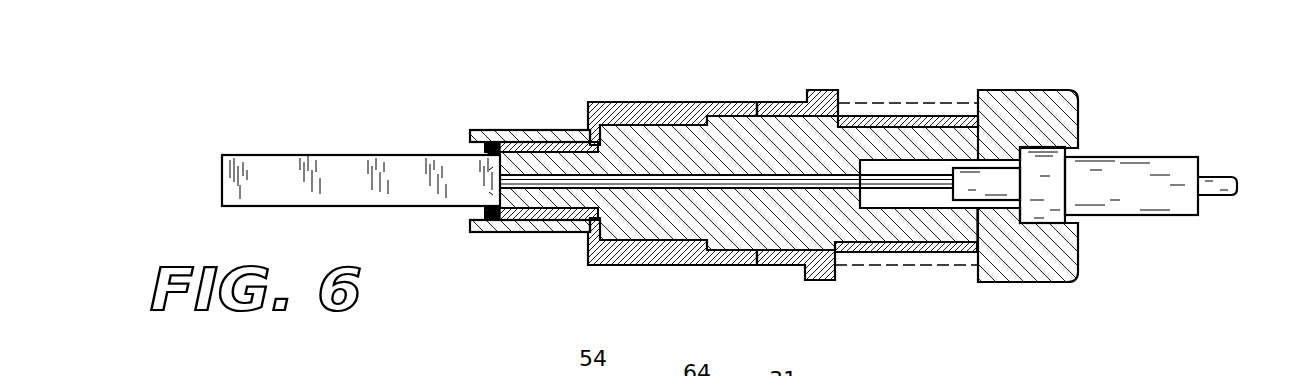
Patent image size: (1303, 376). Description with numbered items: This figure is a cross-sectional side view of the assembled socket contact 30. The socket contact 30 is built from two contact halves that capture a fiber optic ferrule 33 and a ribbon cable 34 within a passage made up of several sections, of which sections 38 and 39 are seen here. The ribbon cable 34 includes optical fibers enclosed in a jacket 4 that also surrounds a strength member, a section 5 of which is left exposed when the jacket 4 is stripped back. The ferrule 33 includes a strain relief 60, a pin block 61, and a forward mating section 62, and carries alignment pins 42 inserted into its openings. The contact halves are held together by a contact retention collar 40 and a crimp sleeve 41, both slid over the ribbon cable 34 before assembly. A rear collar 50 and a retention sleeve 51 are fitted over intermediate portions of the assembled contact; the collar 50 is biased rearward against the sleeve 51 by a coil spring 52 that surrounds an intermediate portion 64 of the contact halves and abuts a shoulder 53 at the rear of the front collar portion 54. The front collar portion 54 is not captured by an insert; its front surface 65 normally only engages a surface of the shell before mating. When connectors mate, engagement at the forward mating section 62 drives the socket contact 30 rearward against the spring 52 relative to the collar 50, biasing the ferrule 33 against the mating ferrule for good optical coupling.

The jacket 4 is at (397, 168).
The section of strength member 5 is at (529, 129).
The socket contact 30 is at (432, 83).
The fiber optic ferrule 33 is at (1117, 167).
The ribbon cable 34 is at (355, 196).
The passage section 38 is at (927, 208).
The passage section 39 is at (667, 190).
The contact retention collar 40 is at (953, 114).
The crimp sleeve 41 is at (521, 231).
The alignment pins 42 is at (1223, 180).
The rear collar 50 is at (780, 101).
The retention sleeve 51 is at (636, 110).
The coil spring 52 is at (917, 105).
The shoulder 53 is at (976, 88).
The front collar portion 54 is at (1080, 273).
The strain relief 60 is at (1005, 187).
The pin block 61 is at (802, 270).
The forward mating section 62 is at (1175, 203).
The intermediate portion 64 is at (880, 232).
The front surface 65 is at (1080, 112).